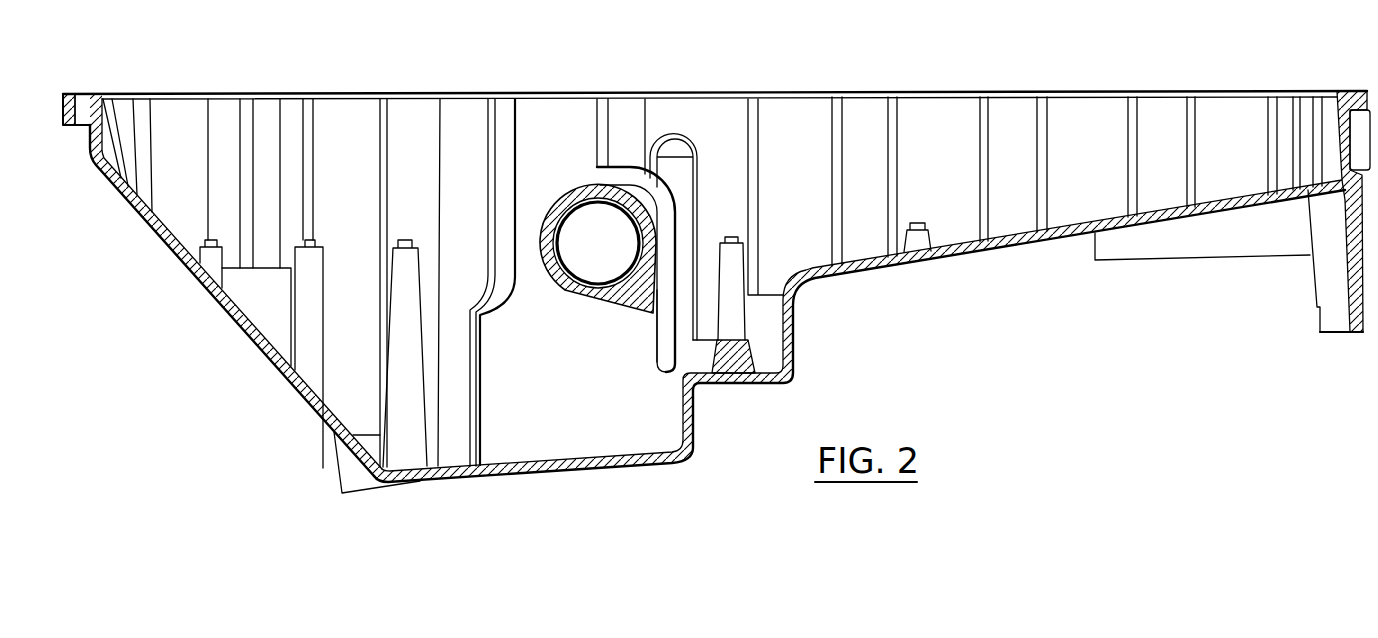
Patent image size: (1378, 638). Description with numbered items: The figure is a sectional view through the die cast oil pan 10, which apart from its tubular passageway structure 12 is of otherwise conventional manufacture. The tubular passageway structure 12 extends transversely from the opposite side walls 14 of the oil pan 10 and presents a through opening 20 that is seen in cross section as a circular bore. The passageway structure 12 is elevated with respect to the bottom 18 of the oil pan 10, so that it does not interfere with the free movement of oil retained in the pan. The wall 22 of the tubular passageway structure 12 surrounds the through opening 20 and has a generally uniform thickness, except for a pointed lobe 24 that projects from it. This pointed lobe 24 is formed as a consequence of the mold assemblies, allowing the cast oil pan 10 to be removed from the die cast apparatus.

The oil pan 10 is at (1044, 80).
The tubular passageway structure 12 is at (568, 297).
The side walls 14 is at (800, 123).
The bottom 18 is at (597, 471).
The through opening 20 is at (631, 243).
The wall 22 is at (566, 200).
The pointed lobe 24 is at (653, 316).